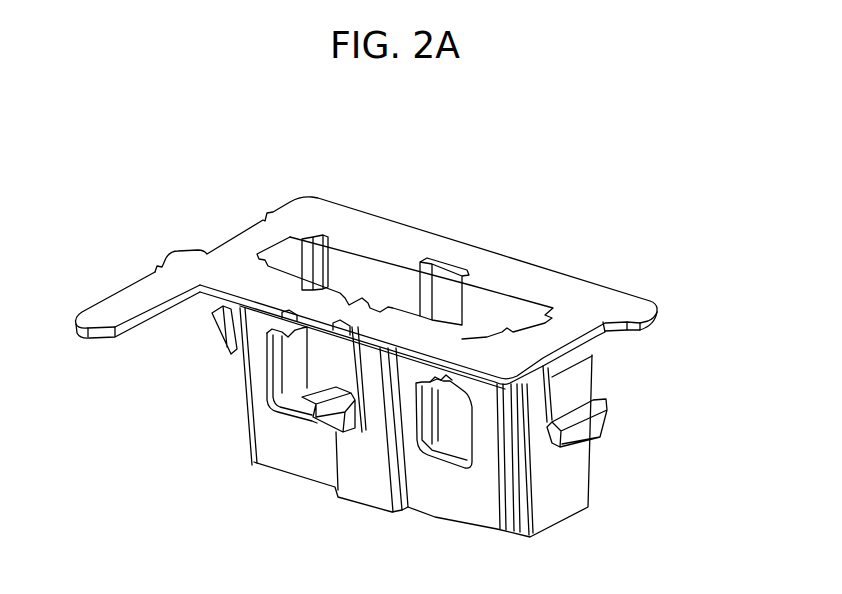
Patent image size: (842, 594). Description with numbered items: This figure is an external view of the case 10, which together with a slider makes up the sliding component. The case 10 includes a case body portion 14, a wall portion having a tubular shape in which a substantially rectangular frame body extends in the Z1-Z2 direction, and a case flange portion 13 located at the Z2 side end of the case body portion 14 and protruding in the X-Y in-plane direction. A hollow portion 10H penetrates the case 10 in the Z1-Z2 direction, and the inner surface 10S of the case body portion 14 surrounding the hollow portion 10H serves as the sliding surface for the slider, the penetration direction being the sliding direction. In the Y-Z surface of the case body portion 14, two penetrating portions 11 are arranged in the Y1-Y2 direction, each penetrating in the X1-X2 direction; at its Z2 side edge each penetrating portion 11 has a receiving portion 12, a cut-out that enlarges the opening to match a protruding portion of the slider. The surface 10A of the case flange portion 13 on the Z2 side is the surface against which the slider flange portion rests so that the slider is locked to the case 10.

The case 10 is at (260, 152).
The surface of the case flange portion 10A is at (248, 259).
The inner surface 10S is at (372, 279).
The hollow portion 10H is at (490, 296).
The penetrating portion 11 is at (288, 382).
The receiving portion 12 is at (245, 350).
The case flange portion 13 is at (656, 322).
The case body portion 14 is at (563, 476).